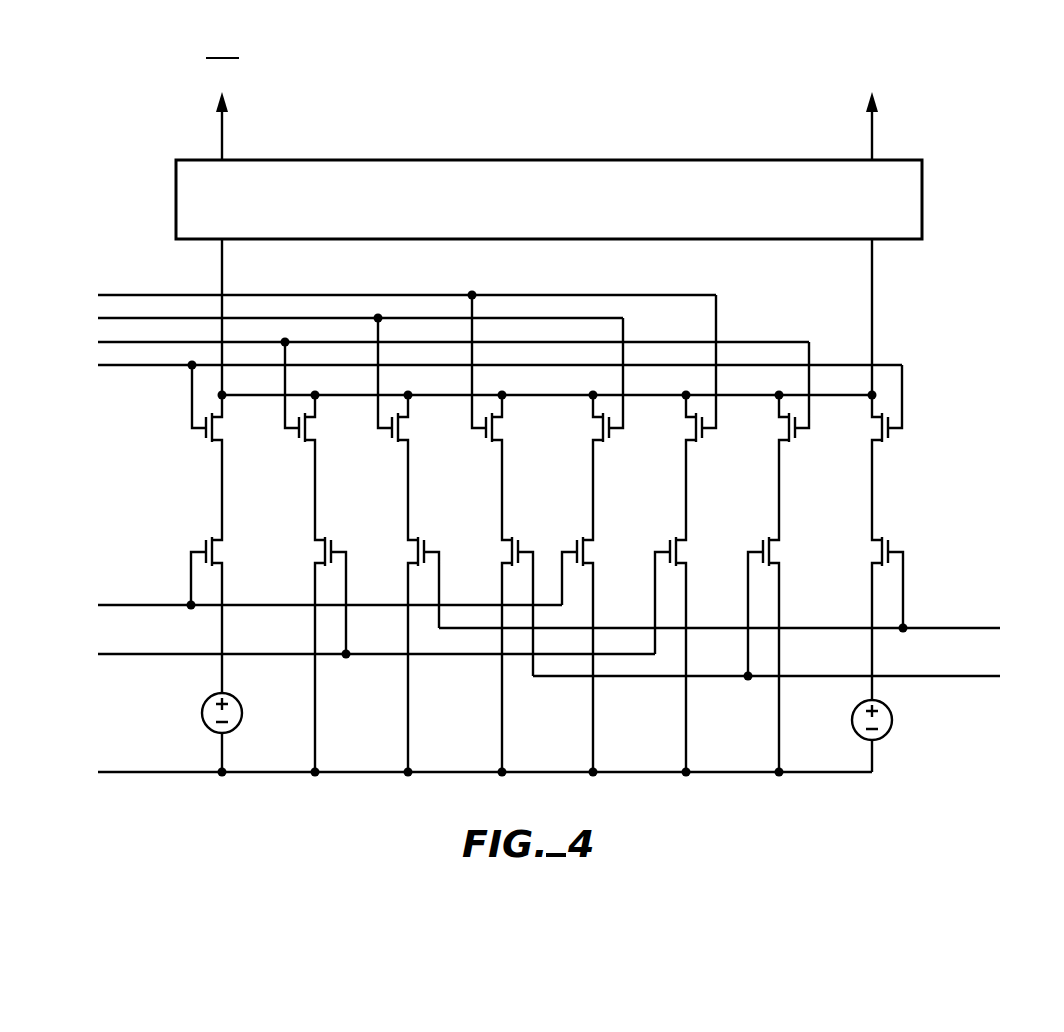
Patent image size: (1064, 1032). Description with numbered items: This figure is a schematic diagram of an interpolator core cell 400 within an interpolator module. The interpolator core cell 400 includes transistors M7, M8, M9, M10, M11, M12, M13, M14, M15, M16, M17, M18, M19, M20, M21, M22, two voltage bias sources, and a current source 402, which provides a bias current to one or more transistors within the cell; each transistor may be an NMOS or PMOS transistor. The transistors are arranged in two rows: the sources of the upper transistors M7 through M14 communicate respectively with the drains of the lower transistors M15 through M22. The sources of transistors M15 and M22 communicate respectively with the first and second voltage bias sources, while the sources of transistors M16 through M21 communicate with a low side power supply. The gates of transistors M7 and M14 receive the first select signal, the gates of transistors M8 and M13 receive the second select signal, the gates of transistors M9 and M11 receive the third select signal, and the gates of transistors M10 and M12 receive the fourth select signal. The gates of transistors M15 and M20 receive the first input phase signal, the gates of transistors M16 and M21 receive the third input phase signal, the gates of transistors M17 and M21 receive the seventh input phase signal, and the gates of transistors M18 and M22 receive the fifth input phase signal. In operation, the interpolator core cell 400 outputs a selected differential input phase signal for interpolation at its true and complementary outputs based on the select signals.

The interpolator core cell 400 is at (958, 254).
The current source 402 is at (549, 199).
The transistor M7 is at (221, 427).
The transistor M8 is at (314, 416).
The transistor M9 is at (407, 404).
The transistor M10 is at (505, 392).
The transistor M11 is at (591, 404).
The transistor M12 is at (684, 392).
The transistor M13 is at (777, 416).
The transistor M14 is at (870, 427).
The transistor M15 is at (225, 591).
The transistor M16 is at (313, 631).
The transistor M17 is at (406, 631).
The transistor M18 is at (500, 631).
The transistor M19 is at (596, 631).
The transistor M20 is at (689, 631).
The transistor M21 is at (782, 631).
The transistor M22 is at (870, 595).